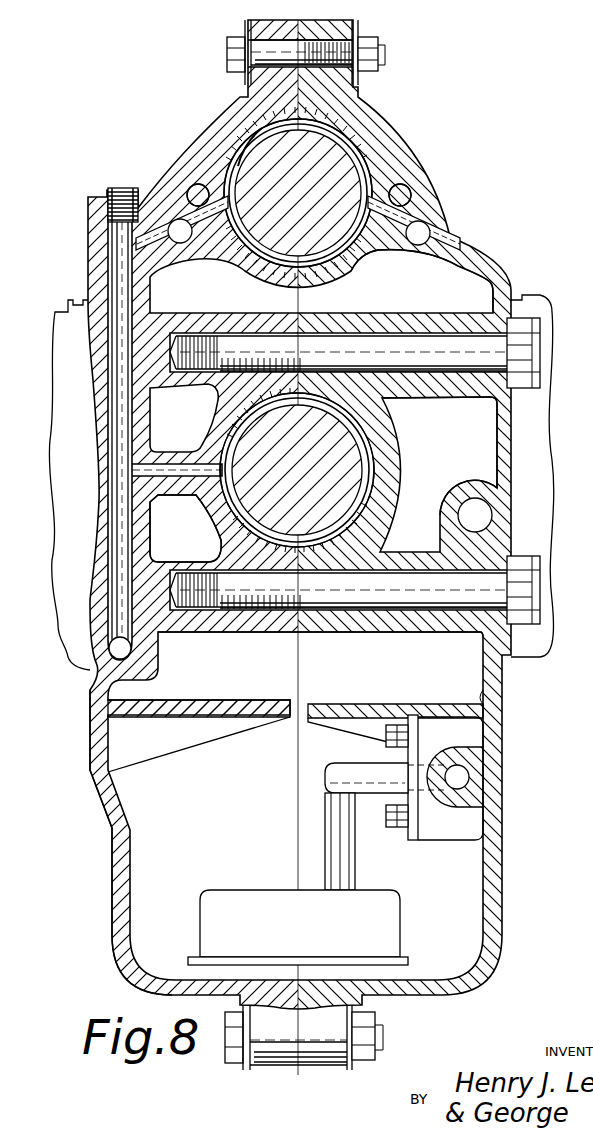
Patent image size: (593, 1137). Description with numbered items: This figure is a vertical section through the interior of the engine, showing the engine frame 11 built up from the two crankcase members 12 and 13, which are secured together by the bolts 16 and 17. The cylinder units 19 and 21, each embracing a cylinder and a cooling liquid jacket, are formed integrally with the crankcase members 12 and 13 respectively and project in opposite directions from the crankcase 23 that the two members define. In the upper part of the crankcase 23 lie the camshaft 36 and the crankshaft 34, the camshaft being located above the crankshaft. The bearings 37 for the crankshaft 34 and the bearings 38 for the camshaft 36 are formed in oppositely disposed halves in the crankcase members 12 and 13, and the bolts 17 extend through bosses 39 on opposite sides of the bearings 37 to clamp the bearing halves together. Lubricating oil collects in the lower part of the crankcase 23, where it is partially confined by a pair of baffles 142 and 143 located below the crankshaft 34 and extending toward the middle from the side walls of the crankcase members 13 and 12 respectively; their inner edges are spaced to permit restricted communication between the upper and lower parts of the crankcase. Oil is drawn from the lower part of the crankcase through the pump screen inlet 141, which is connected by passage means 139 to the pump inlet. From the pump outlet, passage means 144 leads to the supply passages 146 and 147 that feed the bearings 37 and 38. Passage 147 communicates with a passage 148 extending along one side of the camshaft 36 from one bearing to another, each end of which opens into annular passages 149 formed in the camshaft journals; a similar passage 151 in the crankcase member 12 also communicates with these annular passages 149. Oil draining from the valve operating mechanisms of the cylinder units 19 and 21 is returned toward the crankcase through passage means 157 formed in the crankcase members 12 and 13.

The engine frame 11 is at (457, 300).
The crankcase member 12 is at (398, 135).
The crankcase member 13 is at (100, 722).
The bolt 16 is at (243, 40).
The bolt 17 is at (410, 348).
The cylinder unit 19 is at (540, 529).
The cylinder unit 21 is at (78, 562).
The crankcase 23 is at (112, 838).
The crankshaft 34 is at (364, 470).
The camshaft 36 is at (330, 245).
The bearing 37 is at (390, 488).
The bearing 38 is at (247, 283).
The boss 39 is at (463, 398).
The passage means 139 is at (468, 777).
The pump screen inlet 141 is at (254, 900).
The baffle 142 is at (205, 703).
The baffle 143 is at (358, 704).
The passage means 144 is at (132, 648).
The supply passage 146 is at (170, 476).
The supply passage 147 is at (125, 250).
The passage 148 is at (178, 220).
The annular passage 149 is at (238, 165).
The passage 151 is at (430, 237).
The passage means 157 is at (492, 512).